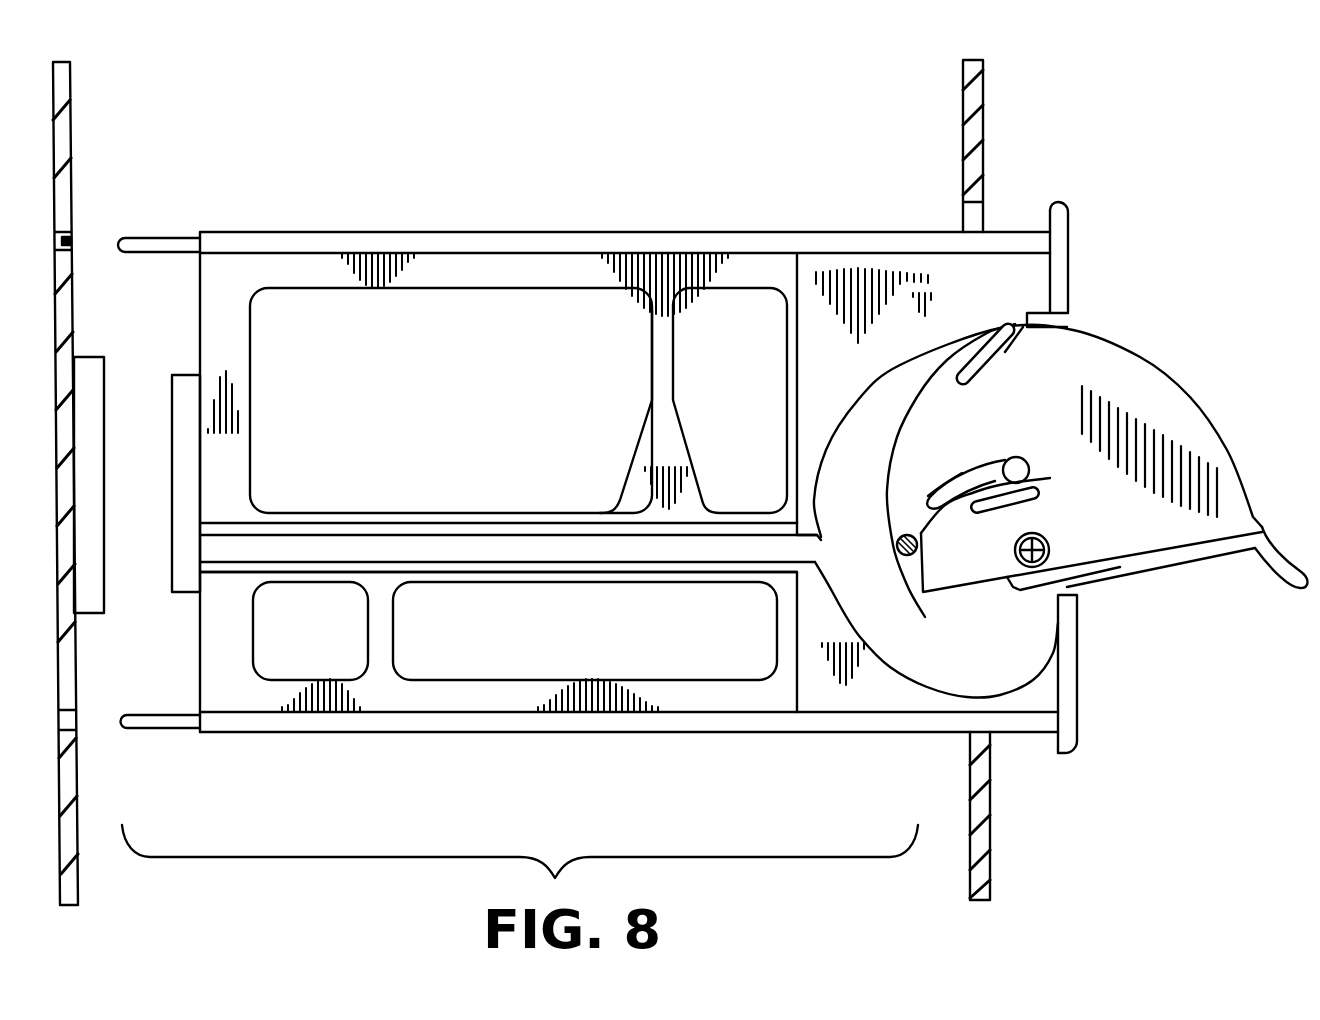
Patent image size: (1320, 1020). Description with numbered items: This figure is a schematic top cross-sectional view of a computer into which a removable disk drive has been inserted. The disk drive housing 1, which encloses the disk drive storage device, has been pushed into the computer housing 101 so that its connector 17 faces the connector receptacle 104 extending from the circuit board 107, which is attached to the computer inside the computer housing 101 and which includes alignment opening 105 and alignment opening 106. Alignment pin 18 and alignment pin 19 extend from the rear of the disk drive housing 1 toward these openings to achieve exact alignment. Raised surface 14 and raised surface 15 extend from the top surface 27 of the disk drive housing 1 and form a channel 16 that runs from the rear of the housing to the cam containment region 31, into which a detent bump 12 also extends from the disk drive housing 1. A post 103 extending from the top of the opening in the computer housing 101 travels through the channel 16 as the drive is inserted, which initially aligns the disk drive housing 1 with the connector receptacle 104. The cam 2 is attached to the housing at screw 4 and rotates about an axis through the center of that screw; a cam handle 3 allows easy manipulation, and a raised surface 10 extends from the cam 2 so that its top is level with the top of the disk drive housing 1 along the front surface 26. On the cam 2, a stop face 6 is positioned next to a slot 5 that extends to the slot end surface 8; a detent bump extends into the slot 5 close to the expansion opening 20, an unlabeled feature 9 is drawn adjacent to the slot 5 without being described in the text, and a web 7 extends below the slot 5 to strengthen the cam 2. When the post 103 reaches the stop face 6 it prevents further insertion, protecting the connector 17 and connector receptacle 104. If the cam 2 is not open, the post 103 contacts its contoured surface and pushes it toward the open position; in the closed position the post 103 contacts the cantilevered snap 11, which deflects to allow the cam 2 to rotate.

The disk drive housing 1 is at (692, 199).
The cam 2 is at (1208, 380).
The cam handle 3 is at (1302, 588).
The screw 4 is at (1050, 546).
The slot 5 is at (975, 463).
The stop face 6 is at (917, 593).
The web 7 is at (910, 520).
The slot end surface 8 is at (928, 505).
The pin 9 is at (1021, 457).
The raised surface 10 is at (1173, 563).
The cantilevered snap 11 is at (973, 343).
The detent bump 12 is at (825, 527).
The raised surface 14 is at (470, 527).
The raised surface 15 is at (525, 571).
The channel 16 is at (505, 550).
The connector 17 is at (186, 374).
The alignment pin 18 is at (158, 237).
The alignment pin 19 is at (176, 730).
The expansion opening 20 is at (1040, 493).
The front surface 26 is at (1070, 300).
The top surface 27 is at (470, 697).
The cam containment region 31 is at (1020, 661).
The computer housing 101 is at (984, 126).
The post 103 is at (903, 555).
The connector receptacle 104 is at (106, 572).
The alignment opening 105 is at (77, 740).
The alignment opening 106 is at (72, 246).
The circuit board 107 is at (75, 142).